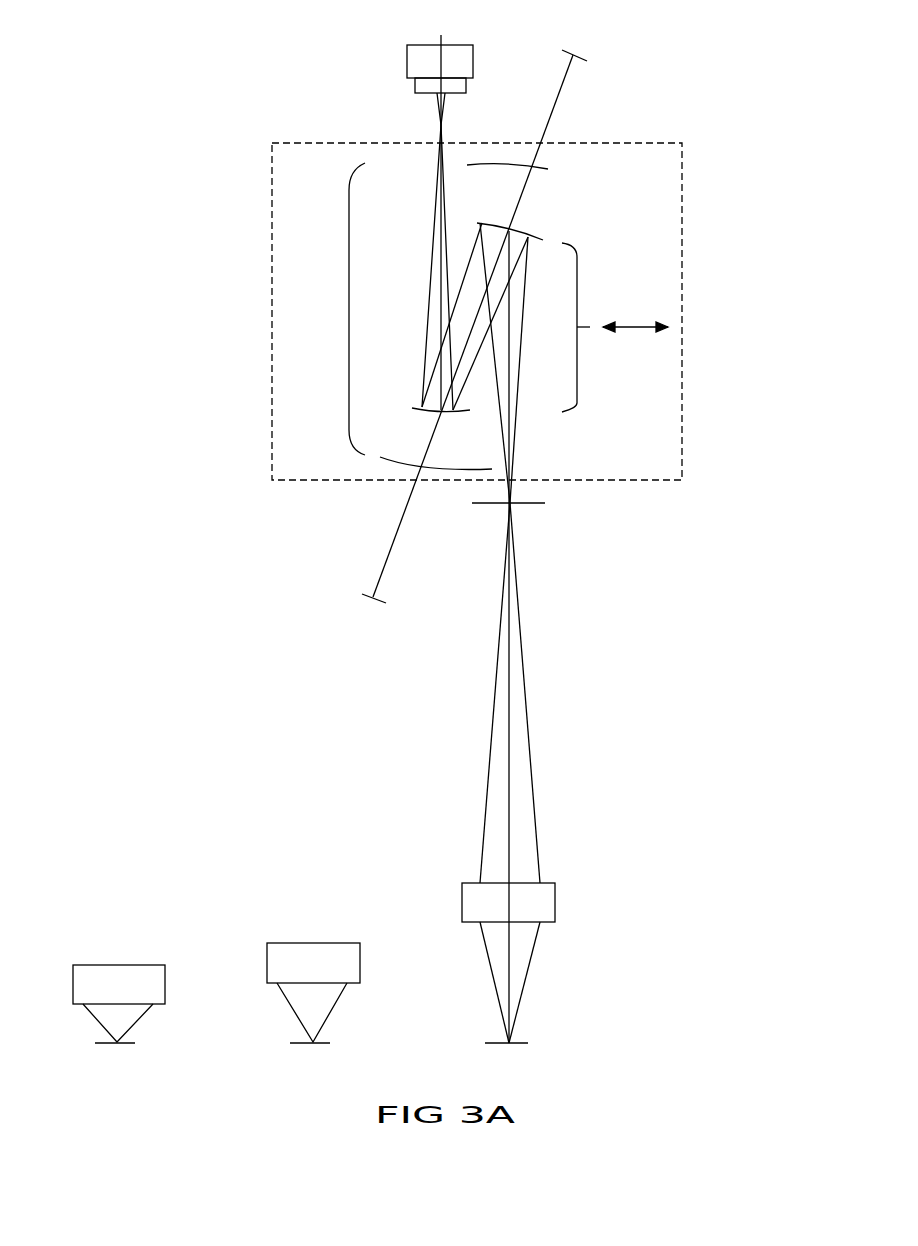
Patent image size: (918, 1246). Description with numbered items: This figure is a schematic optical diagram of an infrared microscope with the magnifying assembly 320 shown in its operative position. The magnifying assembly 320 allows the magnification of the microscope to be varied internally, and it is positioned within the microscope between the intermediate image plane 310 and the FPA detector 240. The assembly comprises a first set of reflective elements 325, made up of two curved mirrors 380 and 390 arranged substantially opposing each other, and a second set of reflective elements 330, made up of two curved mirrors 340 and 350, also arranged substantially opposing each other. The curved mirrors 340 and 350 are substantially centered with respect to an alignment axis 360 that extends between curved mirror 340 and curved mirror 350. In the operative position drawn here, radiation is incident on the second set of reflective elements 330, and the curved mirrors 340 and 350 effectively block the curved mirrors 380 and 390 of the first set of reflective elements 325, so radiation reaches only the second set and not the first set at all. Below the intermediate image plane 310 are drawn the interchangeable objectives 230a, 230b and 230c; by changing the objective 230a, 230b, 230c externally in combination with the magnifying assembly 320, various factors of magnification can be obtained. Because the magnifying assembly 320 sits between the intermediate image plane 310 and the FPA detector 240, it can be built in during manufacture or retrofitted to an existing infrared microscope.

The FPA detector 240 is at (427, 60).
The curved mirror 380 is at (503, 163).
The alignment axis 360 is at (565, 87).
The curved mirror 340 is at (520, 230).
The magnifying assembly 320 is at (647, 229).
The second set of reflective elements 330 is at (588, 326).
The first set of reflective elements 325 is at (349, 310).
The curved mirror 350 is at (437, 417).
The curved mirror 390 is at (484, 225).
The intermediate image plane 310 is at (533, 502).
The objective 230a is at (525, 880).
The objective 230b is at (282, 943).
The objective 230c is at (88, 965).